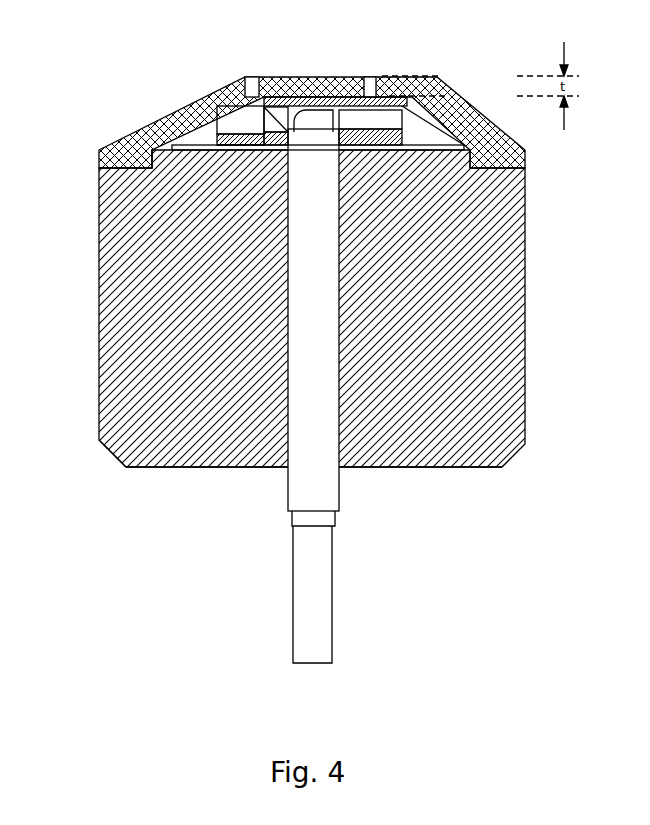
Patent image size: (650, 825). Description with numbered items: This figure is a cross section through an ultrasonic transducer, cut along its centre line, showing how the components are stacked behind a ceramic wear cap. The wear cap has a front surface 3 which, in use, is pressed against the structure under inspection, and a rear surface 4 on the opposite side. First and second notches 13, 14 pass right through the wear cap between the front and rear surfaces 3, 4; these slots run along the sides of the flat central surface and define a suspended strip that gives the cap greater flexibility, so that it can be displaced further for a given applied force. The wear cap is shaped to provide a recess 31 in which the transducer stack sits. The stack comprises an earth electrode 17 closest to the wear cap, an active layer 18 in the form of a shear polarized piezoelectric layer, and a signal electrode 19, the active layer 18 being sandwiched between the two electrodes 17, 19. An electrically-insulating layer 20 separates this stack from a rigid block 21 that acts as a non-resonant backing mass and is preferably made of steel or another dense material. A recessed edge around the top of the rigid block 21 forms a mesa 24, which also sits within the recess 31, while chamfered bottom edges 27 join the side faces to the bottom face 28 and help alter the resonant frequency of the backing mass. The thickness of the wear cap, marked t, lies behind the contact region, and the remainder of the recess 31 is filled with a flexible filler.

The front surface 3 is at (115, 144).
The rear surface 4 is at (446, 127).
The first notch 13 is at (250, 70).
The second notch 14 is at (367, 70).
The earth electrode 17 is at (302, 94).
The active layer 18 is at (343, 104).
The signal electrode 19 is at (223, 133).
The electrically-insulating layer 20 is at (205, 141).
The rigid block 21 is at (112, 254).
The mesa 24 is at (152, 152).
The chamfered bottom edges 27 is at (112, 446).
The bottom face 28 is at (217, 460).
The recess 31 is at (251, 124).